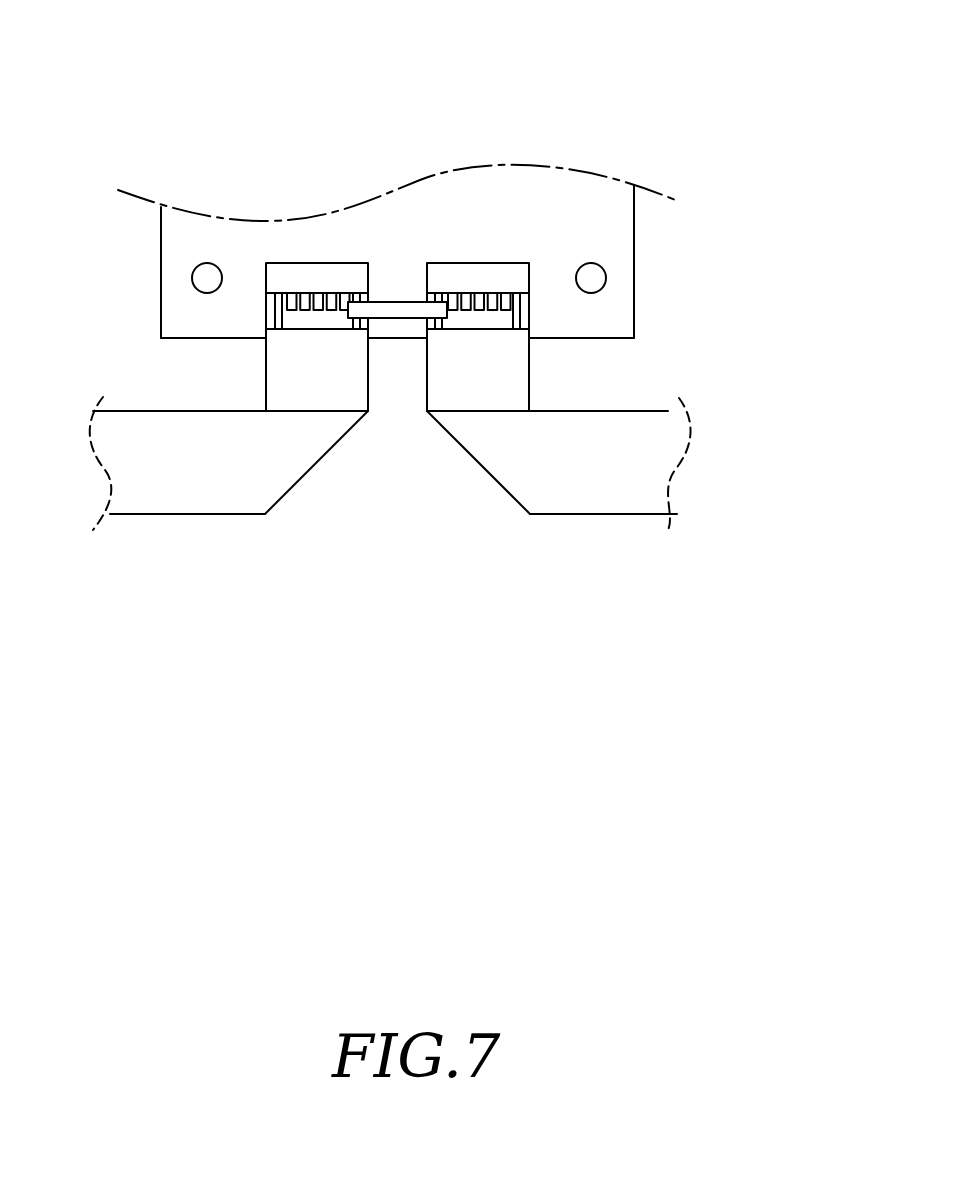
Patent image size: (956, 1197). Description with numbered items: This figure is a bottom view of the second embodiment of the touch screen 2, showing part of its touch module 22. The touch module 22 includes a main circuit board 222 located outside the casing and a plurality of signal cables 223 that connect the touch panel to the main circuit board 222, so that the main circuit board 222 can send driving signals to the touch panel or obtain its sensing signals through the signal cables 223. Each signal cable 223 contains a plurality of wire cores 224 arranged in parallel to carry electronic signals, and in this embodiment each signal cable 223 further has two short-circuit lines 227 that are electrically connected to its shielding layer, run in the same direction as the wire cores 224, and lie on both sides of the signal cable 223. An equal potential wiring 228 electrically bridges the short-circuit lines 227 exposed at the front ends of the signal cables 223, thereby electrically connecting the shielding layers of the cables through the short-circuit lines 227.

The touch screen 2 is at (373, 100).
The touch module 22 is at (730, 220).
The main circuit board 222 is at (617, 243).
The signal cable 223 is at (192, 487).
The wire core 224 is at (292, 297).
The short-circuit line 227 is at (355, 297).
The equal potential wiring 228 is at (400, 310).